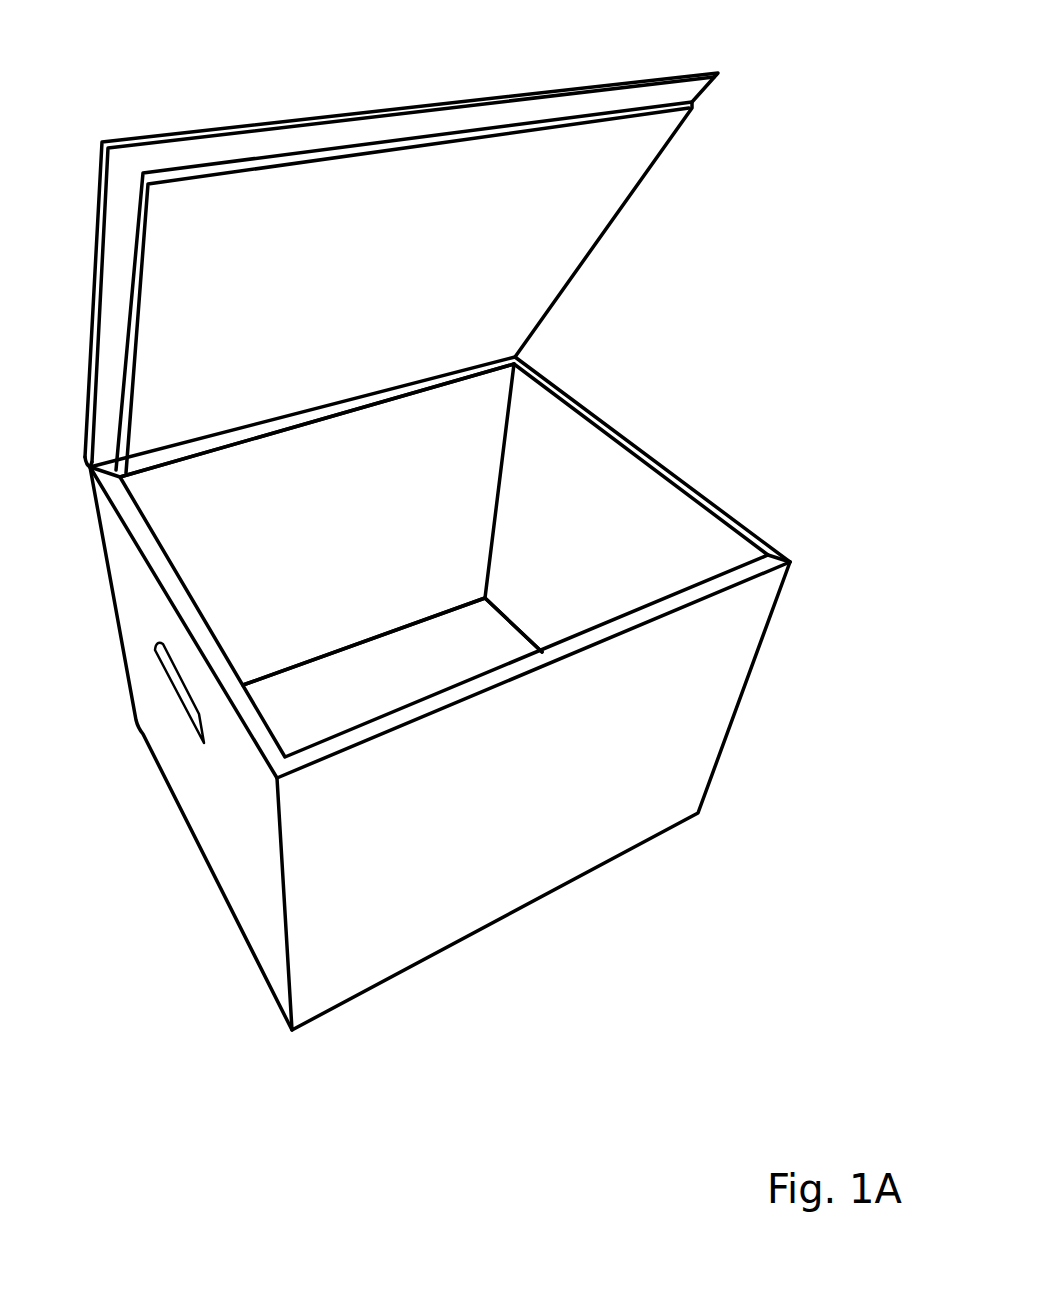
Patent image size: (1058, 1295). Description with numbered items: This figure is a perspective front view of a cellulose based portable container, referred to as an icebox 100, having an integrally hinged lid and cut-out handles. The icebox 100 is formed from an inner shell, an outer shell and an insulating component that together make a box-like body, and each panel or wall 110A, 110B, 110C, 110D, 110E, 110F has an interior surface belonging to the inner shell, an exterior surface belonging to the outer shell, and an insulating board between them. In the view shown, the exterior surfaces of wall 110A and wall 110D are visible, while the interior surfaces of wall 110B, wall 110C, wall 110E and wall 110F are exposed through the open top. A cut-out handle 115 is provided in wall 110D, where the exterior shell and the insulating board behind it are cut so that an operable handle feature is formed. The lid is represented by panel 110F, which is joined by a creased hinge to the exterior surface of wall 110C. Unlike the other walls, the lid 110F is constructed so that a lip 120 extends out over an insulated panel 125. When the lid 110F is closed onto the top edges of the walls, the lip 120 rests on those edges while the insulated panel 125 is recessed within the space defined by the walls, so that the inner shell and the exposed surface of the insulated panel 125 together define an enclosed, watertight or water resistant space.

The icebox 100 is at (833, 31).
The wall 110A is at (545, 809).
The wall 110B is at (617, 575).
The wall 110C is at (362, 537).
The wall 110D is at (262, 809).
The wall 110E is at (423, 681).
The lid 110F is at (382, 272).
The cut-out handle 115 is at (155, 645).
The lip 120 is at (323, 112).
The insulated panel 125 is at (500, 132).